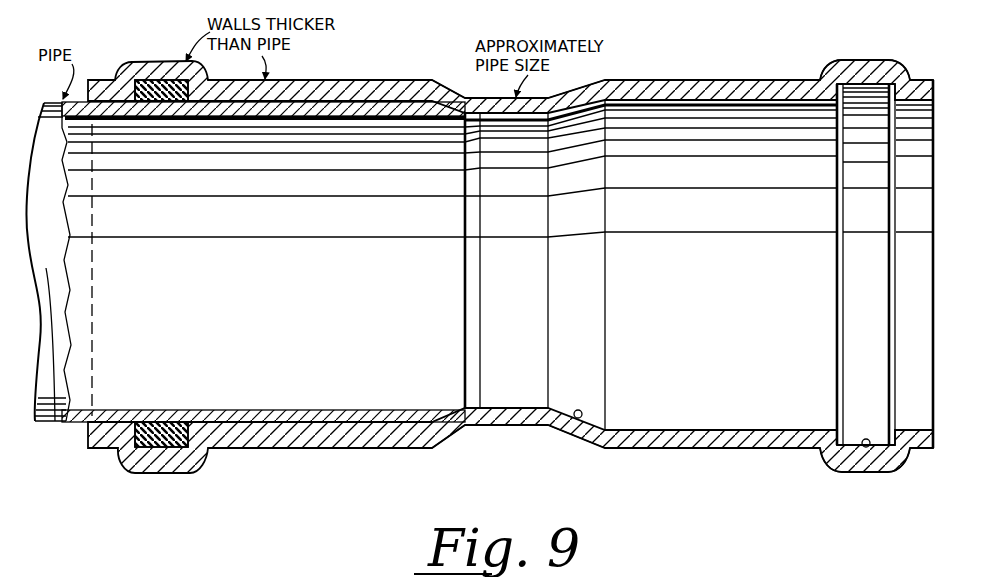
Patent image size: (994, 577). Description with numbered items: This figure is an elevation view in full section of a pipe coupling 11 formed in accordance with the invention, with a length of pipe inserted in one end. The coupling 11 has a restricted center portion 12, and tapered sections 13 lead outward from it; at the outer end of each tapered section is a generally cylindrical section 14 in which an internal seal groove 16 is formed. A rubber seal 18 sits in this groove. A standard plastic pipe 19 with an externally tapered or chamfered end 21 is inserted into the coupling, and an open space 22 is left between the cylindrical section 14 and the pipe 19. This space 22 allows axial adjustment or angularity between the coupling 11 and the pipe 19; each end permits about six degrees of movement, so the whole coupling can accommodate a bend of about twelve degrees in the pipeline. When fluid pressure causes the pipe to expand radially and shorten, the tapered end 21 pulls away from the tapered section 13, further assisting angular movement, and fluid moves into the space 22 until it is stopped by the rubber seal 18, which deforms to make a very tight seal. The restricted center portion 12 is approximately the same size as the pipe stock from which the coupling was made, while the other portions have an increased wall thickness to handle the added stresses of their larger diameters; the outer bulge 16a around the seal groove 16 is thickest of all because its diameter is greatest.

The pipe coupling 11 is at (668, 440).
The restricted center portion 12 is at (500, 426).
The tapered section 13 is at (574, 428).
The cylindrical section 14 is at (366, 423).
The internal seal groove 16 is at (873, 470).
The outer bulge 16a is at (846, 472).
The rubber seal 18 is at (176, 473).
The plastic pipe 19 is at (68, 423).
The tapered end 21 is at (458, 421).
The open space 22 is at (322, 423).